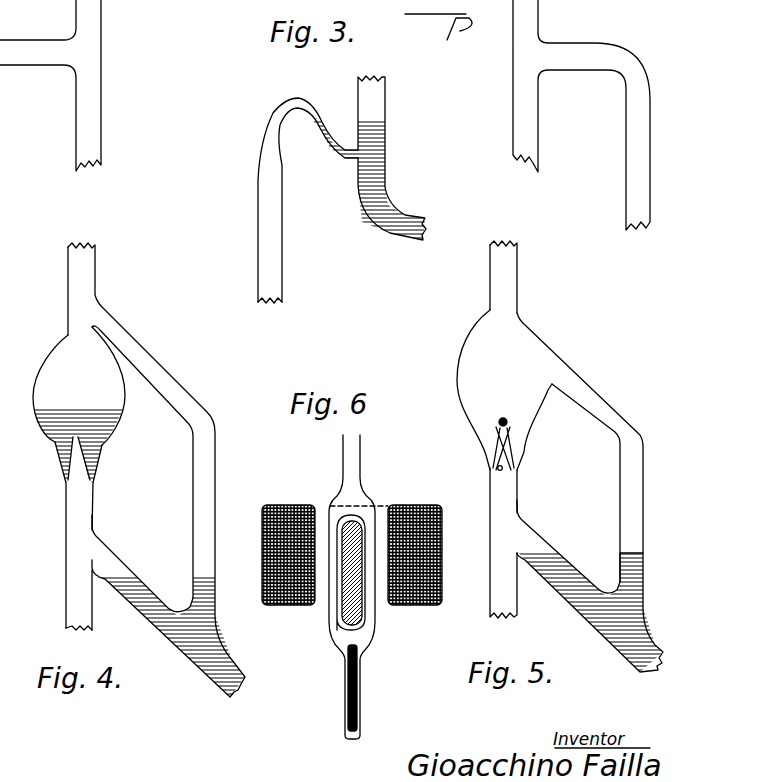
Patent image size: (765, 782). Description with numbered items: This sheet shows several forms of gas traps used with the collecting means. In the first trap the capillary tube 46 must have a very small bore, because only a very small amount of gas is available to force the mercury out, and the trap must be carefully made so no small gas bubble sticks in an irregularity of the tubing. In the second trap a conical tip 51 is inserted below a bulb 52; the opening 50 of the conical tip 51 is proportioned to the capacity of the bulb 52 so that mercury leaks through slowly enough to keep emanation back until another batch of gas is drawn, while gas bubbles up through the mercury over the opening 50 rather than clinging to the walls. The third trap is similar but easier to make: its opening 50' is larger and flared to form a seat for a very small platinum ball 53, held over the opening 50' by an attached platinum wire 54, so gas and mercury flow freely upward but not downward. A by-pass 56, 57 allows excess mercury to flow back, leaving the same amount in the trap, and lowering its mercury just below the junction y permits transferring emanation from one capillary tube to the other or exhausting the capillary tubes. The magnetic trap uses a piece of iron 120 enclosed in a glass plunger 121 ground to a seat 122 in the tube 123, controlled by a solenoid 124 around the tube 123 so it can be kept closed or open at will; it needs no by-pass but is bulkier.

In FIG. 3, the capillary tube 46 is at (322, 136).
In FIG. 4, the opening 50 is at (57, 534).
In FIG. 4, the conical tip 51 is at (60, 456).
In FIG. 4, the bulb 52 is at (79, 405).
In FIG. 5, the opening 50' is at (464, 390).
In FIG. 5, the platinum ball 53 is at (508, 419).
In FIG. 5, the platinum wire 54 is at (494, 469).
In FIG. 5, the by-pass 56 is at (604, 397).
In FIG. 5, the by-pass 57 is at (585, 556).
In FIG. 5, the junction y is at (648, 618).
In FIG. 6, the piece of iron 120 is at (350, 603).
In FIG. 6, the glass plunger 121 is at (337, 543).
In FIG. 6, the seat 122 is at (363, 628).
In FIG. 6, the tube 123 is at (362, 677).
In FIG. 6, the solenoid 124 is at (442, 530).